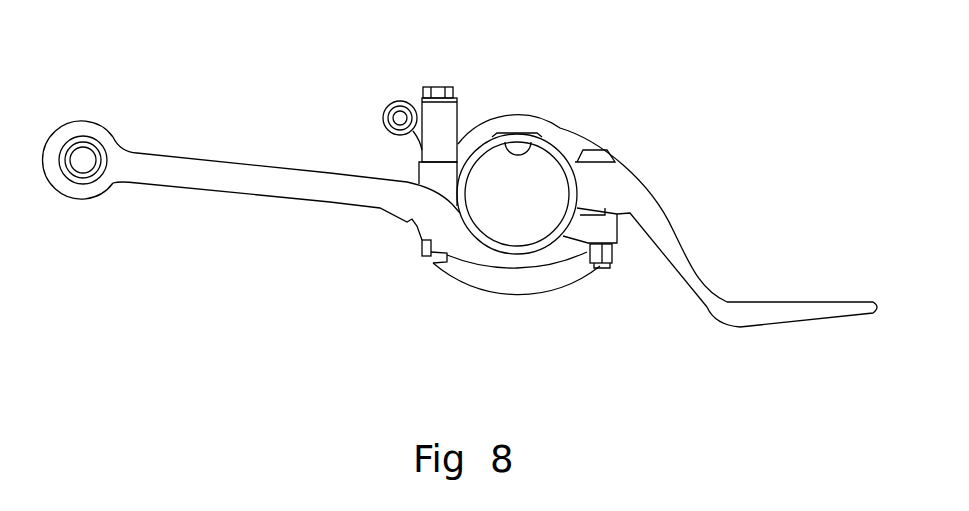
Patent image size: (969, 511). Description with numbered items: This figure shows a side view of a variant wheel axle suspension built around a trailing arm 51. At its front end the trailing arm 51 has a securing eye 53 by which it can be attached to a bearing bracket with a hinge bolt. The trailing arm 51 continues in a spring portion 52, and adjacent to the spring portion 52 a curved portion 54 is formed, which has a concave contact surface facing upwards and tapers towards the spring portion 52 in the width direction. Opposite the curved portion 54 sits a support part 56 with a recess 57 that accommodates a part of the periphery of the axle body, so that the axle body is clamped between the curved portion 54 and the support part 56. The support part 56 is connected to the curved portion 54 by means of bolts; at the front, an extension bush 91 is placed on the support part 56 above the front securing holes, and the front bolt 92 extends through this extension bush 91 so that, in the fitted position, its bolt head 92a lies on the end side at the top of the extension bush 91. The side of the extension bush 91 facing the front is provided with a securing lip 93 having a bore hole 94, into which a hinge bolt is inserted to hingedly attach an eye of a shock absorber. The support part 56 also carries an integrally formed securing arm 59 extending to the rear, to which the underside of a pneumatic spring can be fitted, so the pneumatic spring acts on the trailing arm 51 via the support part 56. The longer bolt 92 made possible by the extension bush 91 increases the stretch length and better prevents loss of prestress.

The trailing arm 51 is at (385, 227).
The spring portion 52 is at (283, 189).
The securing eye 53 is at (93, 133).
The curved portion 54 is at (522, 262).
The support part 56 is at (560, 130).
The recess 57 is at (540, 188).
The securing arm 59 is at (838, 306).
The extension bush 91 is at (452, 113).
The front bolt 92 is at (440, 261).
The bolt head 92a is at (435, 87).
The securing lip 93 is at (390, 103).
The bore hole 94 is at (396, 122).